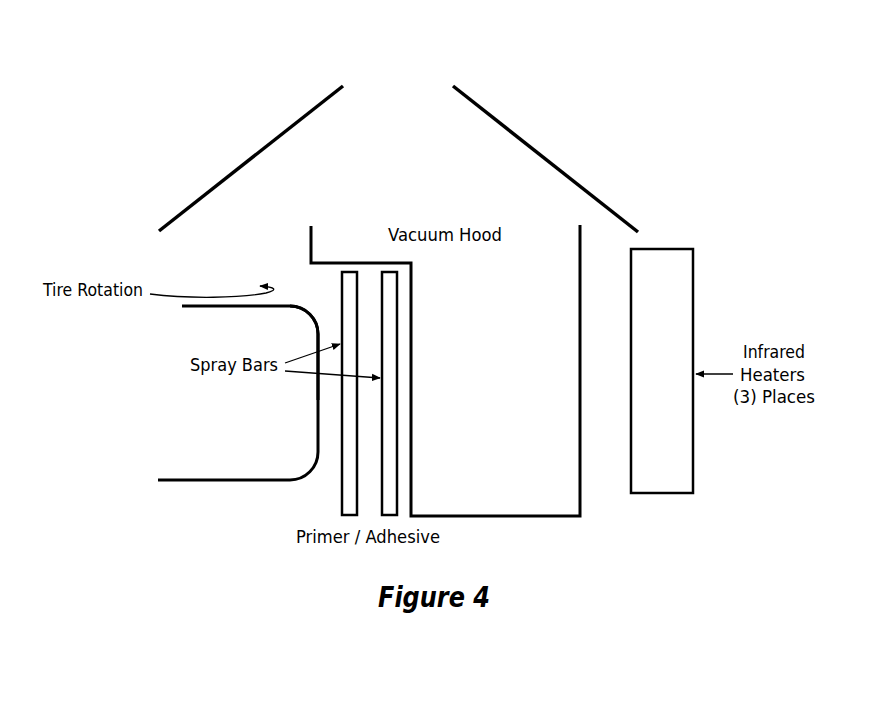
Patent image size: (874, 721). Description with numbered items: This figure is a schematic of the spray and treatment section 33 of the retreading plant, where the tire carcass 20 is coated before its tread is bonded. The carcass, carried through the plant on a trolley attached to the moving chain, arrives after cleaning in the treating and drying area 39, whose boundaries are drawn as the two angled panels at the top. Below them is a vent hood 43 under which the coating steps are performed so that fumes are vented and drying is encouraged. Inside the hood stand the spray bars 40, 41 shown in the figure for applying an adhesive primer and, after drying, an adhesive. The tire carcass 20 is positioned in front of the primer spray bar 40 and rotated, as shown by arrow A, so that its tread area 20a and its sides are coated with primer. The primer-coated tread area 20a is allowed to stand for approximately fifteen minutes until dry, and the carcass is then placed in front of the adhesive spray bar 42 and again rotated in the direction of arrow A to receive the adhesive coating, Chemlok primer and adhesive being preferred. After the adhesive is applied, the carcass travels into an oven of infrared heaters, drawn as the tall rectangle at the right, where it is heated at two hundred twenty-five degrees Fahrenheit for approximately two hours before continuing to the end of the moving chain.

The spray and treatment section 33 is at (487, 78).
The treating and drying area 39 is at (234, 165).
The vent hood 43 is at (552, 163).
The tire carcass 20 is at (318, 428).
The tire carcass tread area 20a is at (318, 326).
The arrow A is at (225, 297).
The primer spray bar 40 is at (341, 490).
The adhesive spray bar 41 is at (398, 482).
The adhesive spray bar 42 is at (679, 457).